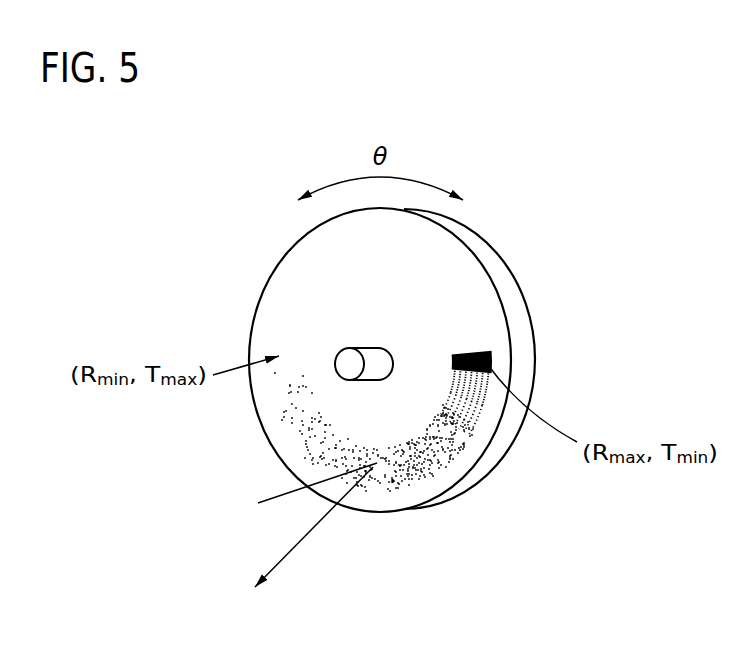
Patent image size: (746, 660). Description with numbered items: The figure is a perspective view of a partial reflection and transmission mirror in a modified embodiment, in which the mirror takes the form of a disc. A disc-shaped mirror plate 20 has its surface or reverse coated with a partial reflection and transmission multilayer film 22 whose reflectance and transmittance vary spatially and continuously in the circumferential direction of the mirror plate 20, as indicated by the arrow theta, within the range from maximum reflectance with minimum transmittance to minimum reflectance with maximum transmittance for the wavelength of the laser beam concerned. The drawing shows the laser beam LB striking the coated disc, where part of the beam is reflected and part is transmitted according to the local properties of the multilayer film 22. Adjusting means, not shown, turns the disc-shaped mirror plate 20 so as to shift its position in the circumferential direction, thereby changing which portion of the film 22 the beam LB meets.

The disc-shaped mirror plate 20 is at (292, 275).
The partial reflection and transmission multilayer film 22 is at (422, 463).
The light beam LB is at (258, 503).